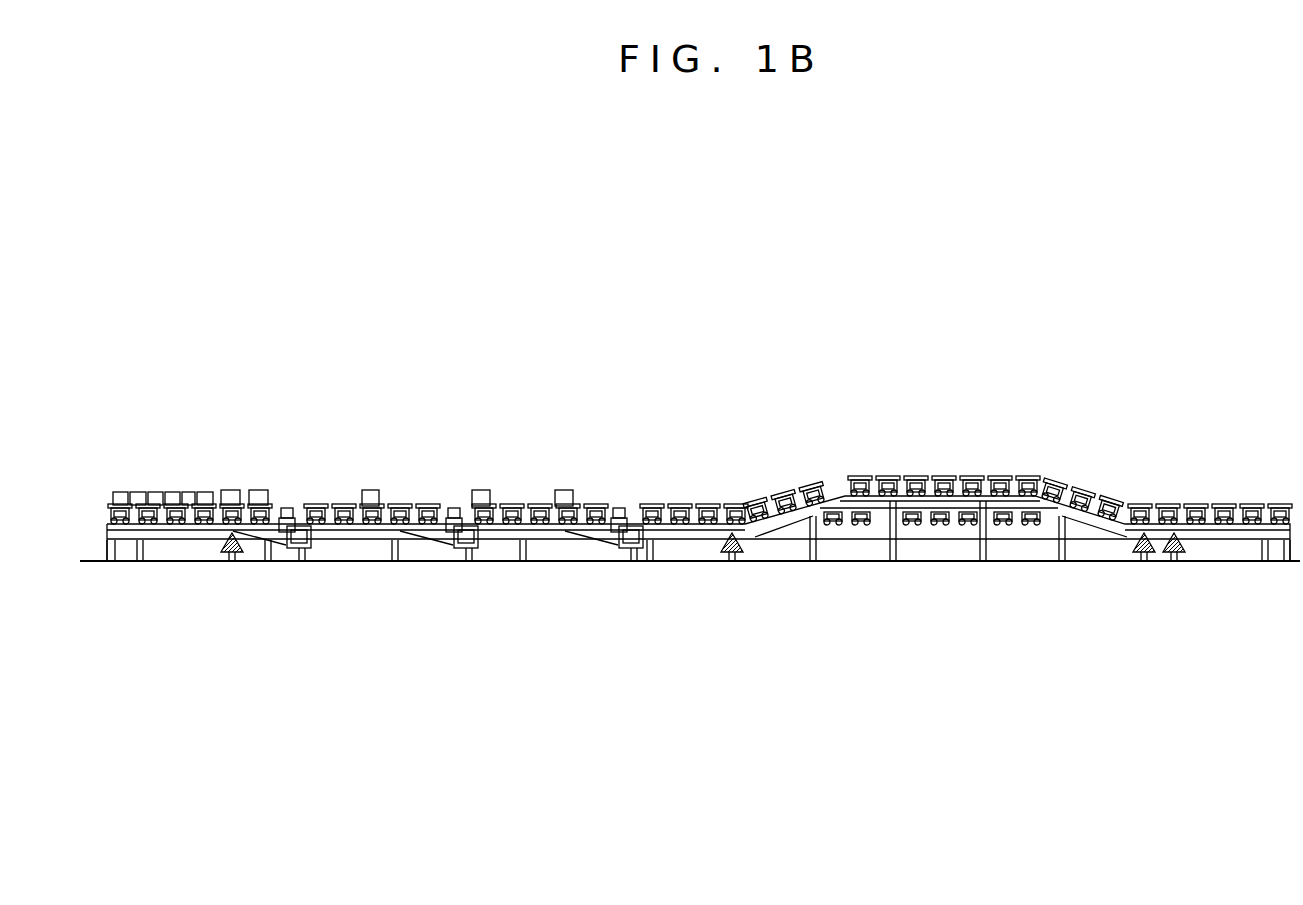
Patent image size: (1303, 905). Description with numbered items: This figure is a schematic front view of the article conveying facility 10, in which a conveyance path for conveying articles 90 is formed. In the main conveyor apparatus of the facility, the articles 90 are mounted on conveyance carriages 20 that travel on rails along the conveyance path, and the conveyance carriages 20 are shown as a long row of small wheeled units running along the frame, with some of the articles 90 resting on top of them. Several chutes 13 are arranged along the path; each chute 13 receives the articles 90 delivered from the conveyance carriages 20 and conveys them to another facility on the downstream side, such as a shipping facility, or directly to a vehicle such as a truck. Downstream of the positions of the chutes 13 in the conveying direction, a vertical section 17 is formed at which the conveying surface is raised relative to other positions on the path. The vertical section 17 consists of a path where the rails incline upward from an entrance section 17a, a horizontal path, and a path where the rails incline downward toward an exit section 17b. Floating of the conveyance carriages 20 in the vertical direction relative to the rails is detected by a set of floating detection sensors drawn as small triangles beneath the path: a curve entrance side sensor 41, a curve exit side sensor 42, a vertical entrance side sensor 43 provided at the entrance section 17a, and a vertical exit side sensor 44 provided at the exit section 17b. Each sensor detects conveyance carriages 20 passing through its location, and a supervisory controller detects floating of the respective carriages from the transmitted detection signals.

The article conveying facility 10 is at (158, 460).
The chute 13 is at (306, 548).
The vertical section 17 is at (968, 460).
The entrance section 17a is at (730, 500).
The exit section 17b is at (1140, 498).
The conveyance carriage 20 is at (345, 503).
The curve entrance side sensor 41 is at (1177, 558).
The curve exit side sensor 42 is at (230, 558).
The vertical entrance side sensor 43 is at (735, 558).
The vertical exit side sensor 44 is at (1142, 558).
The article 90 is at (373, 490).